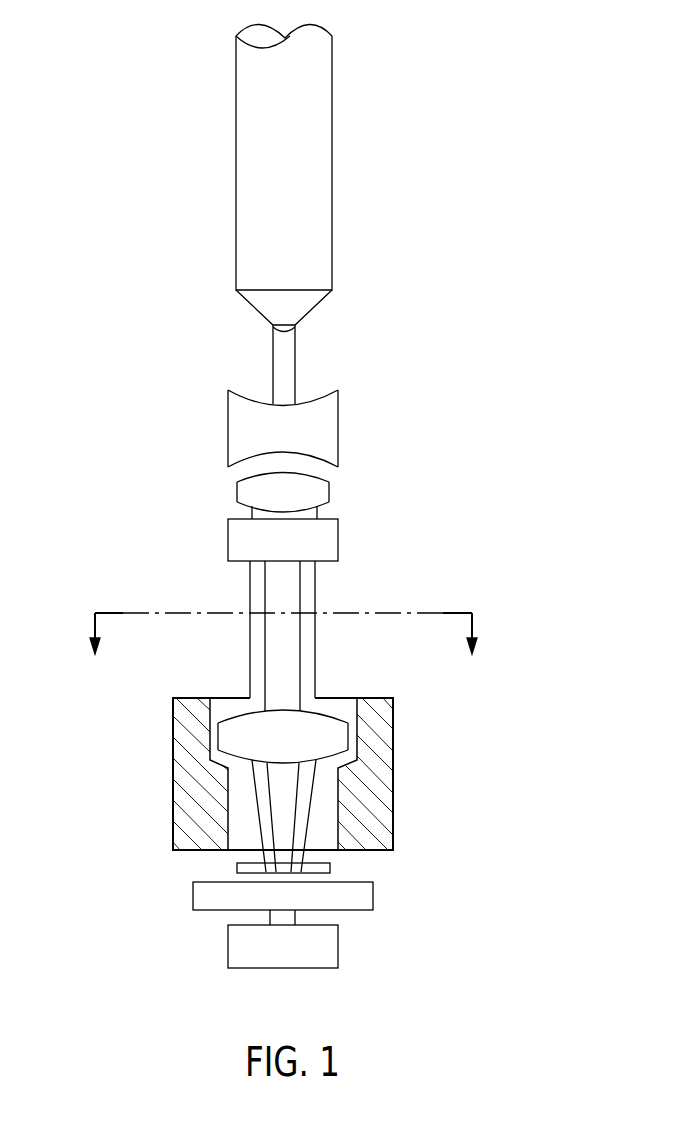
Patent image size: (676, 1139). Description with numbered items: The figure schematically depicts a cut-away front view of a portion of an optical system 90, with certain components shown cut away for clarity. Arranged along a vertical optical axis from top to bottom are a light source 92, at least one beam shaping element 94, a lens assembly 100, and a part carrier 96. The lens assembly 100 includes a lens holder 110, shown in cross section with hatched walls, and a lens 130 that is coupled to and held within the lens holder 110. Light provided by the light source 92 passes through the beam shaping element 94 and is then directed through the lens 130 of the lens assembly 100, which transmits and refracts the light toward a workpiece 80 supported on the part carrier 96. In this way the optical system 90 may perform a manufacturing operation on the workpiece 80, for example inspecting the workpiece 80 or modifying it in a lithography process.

The optical system 90 is at (453, 88).
The light source 92 is at (332, 227).
The beam shaping element 94 is at (453, 444).
The lens assembly 100 is at (453, 782).
The lens holder 110 is at (395, 827).
The lens 130 is at (233, 718).
The workpiece 80 is at (237, 868).
The part carrier 96 is at (338, 945).